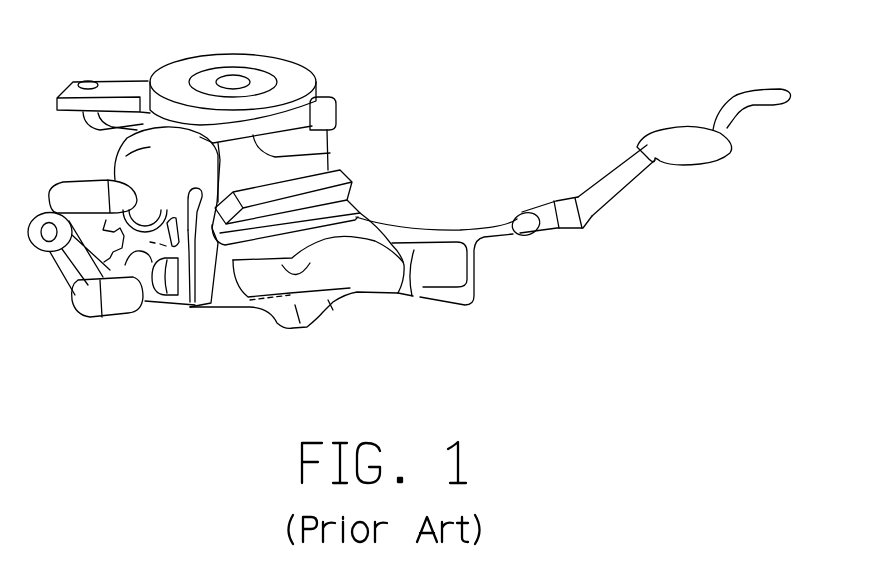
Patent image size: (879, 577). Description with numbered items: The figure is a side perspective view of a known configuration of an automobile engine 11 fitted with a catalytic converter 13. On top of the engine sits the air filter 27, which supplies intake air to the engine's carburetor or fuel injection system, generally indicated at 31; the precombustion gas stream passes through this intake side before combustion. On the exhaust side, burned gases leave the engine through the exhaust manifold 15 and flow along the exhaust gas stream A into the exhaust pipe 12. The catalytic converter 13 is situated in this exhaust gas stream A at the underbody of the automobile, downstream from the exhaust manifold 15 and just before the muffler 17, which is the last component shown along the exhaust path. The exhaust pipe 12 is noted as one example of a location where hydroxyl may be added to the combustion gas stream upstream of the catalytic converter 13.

The automobile engine 11 is at (114, 149).
The exhaust pipe 12 is at (493, 232).
The catalytic converter 13 is at (556, 231).
The exhaust manifold 15 is at (371, 273).
The muffler 17 is at (676, 140).
The air filter 27 is at (203, 82).
The carburetor or fuel injection system 31 is at (326, 153).
The exhaust gas stream A is at (405, 233).